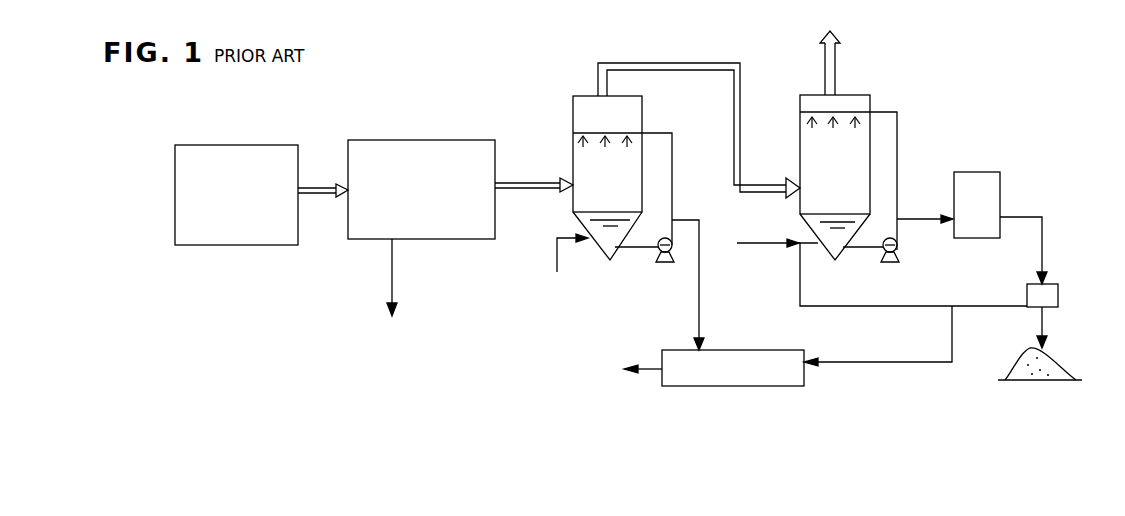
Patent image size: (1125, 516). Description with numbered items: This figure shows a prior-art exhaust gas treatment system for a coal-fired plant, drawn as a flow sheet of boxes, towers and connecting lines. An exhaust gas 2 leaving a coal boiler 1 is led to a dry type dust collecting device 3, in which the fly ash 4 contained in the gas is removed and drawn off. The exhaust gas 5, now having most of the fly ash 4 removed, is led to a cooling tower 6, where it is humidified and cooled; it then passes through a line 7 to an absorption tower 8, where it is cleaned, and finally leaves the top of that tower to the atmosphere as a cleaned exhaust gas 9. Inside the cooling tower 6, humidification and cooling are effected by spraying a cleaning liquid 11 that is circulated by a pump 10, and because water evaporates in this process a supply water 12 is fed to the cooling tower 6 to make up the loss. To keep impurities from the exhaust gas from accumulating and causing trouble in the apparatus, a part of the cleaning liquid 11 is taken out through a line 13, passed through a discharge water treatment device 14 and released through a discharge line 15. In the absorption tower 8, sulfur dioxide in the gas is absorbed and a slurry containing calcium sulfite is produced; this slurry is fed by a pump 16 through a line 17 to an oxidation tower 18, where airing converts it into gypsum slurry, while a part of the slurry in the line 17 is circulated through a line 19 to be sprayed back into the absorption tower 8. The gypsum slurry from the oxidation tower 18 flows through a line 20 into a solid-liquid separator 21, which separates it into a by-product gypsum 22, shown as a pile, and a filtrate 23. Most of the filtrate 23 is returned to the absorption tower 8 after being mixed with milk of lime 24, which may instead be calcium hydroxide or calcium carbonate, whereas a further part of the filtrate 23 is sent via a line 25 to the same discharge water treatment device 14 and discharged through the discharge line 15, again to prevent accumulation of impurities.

The coal boiler 1 is at (236, 165).
The exhaust gas 2 is at (323, 142).
The dry type dust collecting device 3 is at (421, 161).
The fly ash 4 is at (417, 277).
The exhaust gas 5 is at (534, 149).
The cooling tower 6 is at (573, 96).
The line 7 is at (699, 106).
The absorption tower 8 is at (866, 165).
The cleaned exhaust gas 9 is at (857, 63).
The pump 10 is at (644, 273).
The cleaning liquid 11 is at (678, 187).
The supply water 12 is at (559, 277).
The line 13 is at (718, 285).
The discharge water treatment device 14 is at (733, 395).
The discharge line 15 is at (643, 395).
The pump 16 is at (873, 273).
The line 17 is at (900, 237).
The oxidation tower 18 is at (994, 185).
The line 19 is at (920, 181).
The line 20 is at (1038, 236).
The solid-liquid separator 21 is at (1071, 288).
The gypsum 22 is at (1041, 343).
The filtrate 23 is at (913, 274).
The milk of lime 24 is at (777, 270).
The line 25 is at (878, 372).